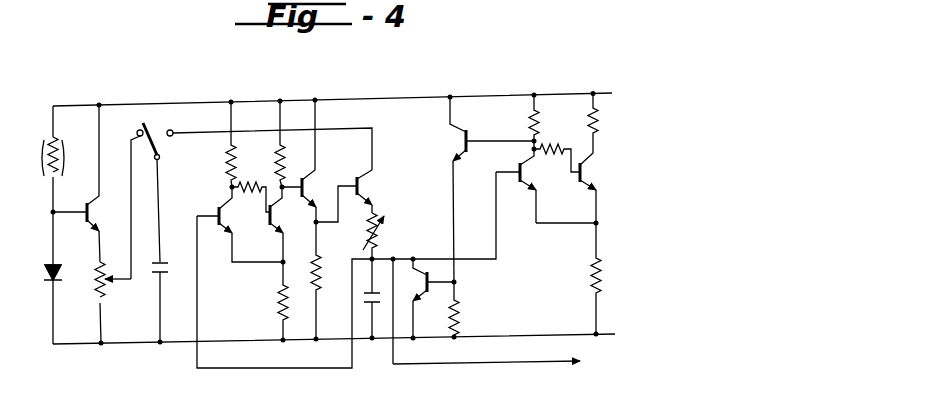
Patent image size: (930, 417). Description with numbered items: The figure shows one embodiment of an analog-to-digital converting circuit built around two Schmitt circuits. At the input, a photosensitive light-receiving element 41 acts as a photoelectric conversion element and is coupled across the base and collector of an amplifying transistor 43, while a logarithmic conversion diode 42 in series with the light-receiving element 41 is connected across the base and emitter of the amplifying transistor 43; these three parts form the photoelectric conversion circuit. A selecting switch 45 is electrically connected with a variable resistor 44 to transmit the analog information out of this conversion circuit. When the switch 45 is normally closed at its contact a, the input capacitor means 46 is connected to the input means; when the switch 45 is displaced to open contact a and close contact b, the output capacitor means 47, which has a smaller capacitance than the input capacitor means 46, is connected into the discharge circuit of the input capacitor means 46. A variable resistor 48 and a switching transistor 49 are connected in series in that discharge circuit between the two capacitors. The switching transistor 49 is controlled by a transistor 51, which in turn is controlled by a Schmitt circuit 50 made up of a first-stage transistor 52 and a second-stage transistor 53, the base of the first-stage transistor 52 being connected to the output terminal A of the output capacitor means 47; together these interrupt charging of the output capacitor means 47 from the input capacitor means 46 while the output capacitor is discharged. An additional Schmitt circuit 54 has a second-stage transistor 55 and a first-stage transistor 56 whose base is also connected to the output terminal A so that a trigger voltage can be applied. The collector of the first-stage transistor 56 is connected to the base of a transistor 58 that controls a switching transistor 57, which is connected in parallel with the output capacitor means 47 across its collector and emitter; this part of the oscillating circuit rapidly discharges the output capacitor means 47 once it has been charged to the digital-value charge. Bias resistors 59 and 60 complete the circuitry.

The photosensitive light-receiving element 41 is at (63, 158).
The logarithmic conversion diode 42 is at (52, 292).
The amplifying transistor 43 is at (92, 224).
The variable resistor 44 is at (97, 294).
The selecting switch 45 is at (159, 132).
The input capacitor means 46 is at (153, 278).
The output capacitor means 47 is at (361, 298).
The variable resistor 48 is at (382, 226).
The switching transistor 49 is at (360, 185).
The Schmitt circuit 50 is at (245, 184).
The transistor 51 is at (311, 182).
The first-stage transistor 52 is at (226, 236).
The second-stage transistor 53 is at (277, 212).
The additional Schmitt circuit 54 is at (553, 226).
The second-stage transistor 55 is at (590, 174).
The first-stage transistor 56 is at (520, 188).
The switching transistor 57 is at (416, 299).
The transistor 58 is at (462, 141).
The bias resistor 59 is at (322, 274).
The bias resistor 60 is at (459, 311).
The output terminal A is at (376, 259).